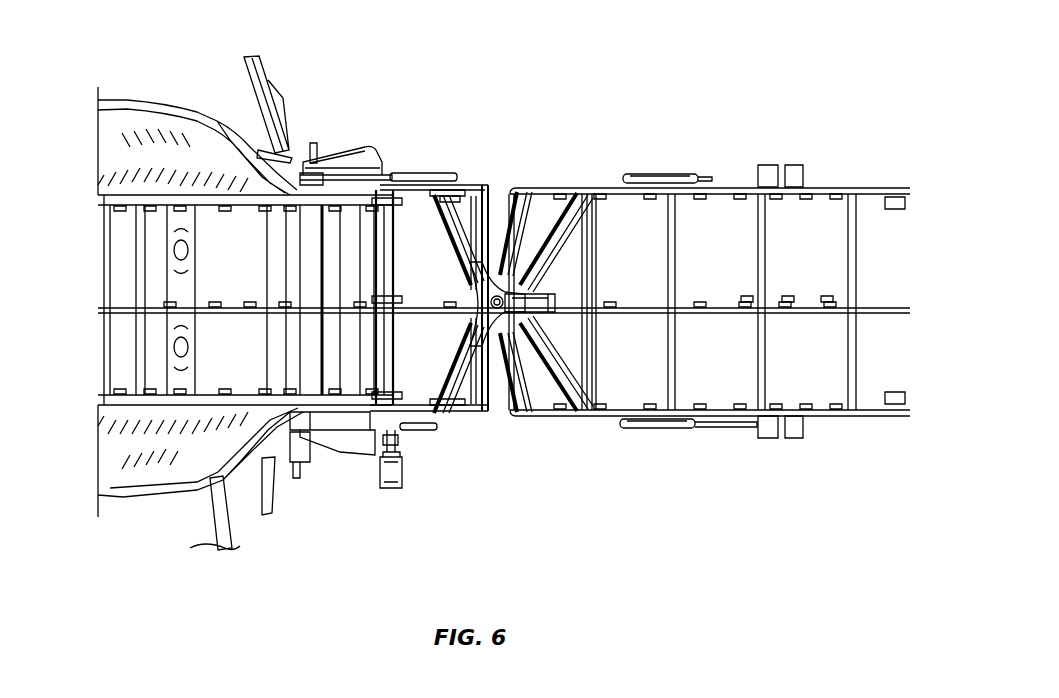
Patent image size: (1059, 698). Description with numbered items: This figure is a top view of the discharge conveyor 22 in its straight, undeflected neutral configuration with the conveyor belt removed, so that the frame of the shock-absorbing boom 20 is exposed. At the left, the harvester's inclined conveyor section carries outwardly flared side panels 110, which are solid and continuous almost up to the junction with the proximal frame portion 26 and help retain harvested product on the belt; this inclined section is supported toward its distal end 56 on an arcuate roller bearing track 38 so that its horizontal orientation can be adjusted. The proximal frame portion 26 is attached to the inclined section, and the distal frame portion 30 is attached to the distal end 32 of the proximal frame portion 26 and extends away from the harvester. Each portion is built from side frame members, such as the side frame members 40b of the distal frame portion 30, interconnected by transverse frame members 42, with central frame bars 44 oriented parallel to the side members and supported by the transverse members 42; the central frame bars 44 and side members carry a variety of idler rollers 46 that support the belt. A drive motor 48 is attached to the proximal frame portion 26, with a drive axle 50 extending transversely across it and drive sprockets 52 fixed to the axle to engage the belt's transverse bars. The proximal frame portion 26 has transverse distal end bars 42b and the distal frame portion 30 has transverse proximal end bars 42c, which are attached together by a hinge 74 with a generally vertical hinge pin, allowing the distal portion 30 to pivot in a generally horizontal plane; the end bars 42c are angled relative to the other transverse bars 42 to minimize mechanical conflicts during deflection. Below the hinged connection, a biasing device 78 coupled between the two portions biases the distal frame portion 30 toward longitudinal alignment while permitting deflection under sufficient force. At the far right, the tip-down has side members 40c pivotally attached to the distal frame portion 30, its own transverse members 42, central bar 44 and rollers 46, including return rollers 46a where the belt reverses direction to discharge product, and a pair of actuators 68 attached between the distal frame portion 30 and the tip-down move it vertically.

The shock-absorbing boom 20 is at (504, 400).
The discharge conveyor 22 is at (692, 75).
The proximal frame portion 26 is at (312, 520).
The distal frame portion 30 is at (702, 376).
The distal end of the proximal frame portion 32 is at (478, 176).
The arcuate roller bearing track 38 is at (247, 70).
The side frame members of the distal frame portion 40b is at (596, 186).
The tip-down side members 40c is at (822, 190).
The transverse frame members 42 is at (757, 237).
The transverse distal end bars 42b is at (457, 385).
The transverse proximal end bars 42c is at (580, 193).
The central frame bars 44 is at (228, 313).
The idler rollers 46 is at (803, 200).
The return rollers 46a is at (888, 211).
The drive motor 48 is at (380, 478).
The drive axle 50 is at (447, 235).
The drive sprockets 52 is at (393, 262).
The distal end of the inclined conveyor section 56 is at (328, 155).
The actuators 68 is at (672, 172).
The hinge 74 is at (490, 266).
The biasing device 78 is at (553, 298).
The outwardly flared side panels 110 is at (157, 118).